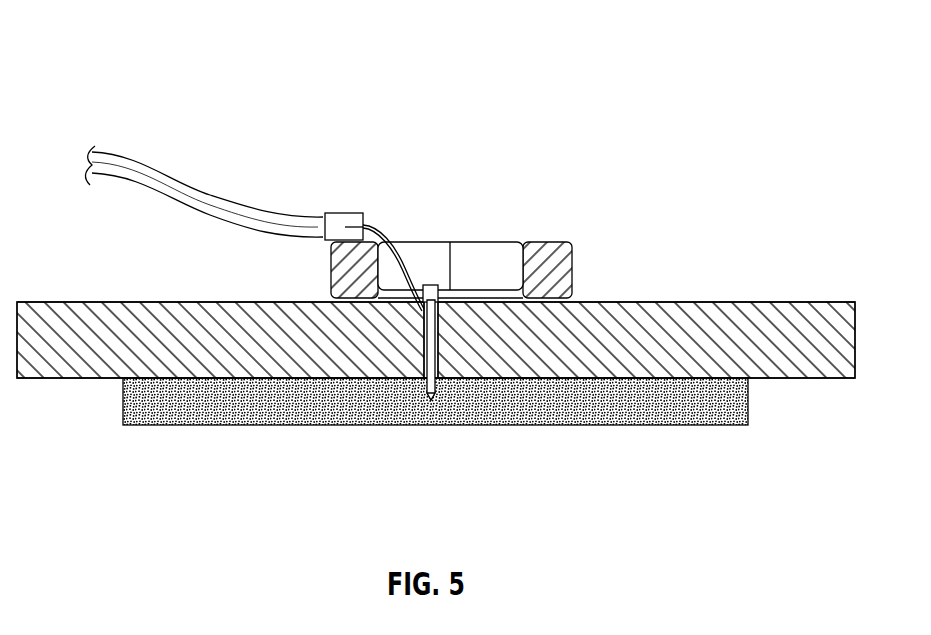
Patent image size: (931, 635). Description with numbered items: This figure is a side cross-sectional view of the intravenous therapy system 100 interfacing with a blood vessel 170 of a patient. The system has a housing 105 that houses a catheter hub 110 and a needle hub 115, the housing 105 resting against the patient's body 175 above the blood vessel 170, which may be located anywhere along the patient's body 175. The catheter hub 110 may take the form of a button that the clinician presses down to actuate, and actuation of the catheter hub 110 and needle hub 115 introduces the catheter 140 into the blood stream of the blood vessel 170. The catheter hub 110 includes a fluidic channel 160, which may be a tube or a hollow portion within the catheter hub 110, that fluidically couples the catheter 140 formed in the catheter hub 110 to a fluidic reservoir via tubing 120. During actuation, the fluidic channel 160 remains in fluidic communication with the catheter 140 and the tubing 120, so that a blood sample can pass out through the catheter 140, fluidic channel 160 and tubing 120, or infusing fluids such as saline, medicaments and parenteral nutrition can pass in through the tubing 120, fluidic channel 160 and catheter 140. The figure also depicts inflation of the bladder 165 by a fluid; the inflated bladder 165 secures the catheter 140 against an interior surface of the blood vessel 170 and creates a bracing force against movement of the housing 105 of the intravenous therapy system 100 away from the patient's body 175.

The intravenous therapy system 100 is at (146, 48).
The housing 105 is at (340, 283).
The catheter hub 110 is at (420, 253).
The needle hub 115 is at (475, 257).
The tubing 120 is at (138, 158).
The catheter 140 is at (432, 335).
The fluidic channel 160 is at (372, 226).
The bladder 165 is at (432, 401).
The blood vessel 170 is at (183, 410).
The patient's body 175 is at (693, 316).